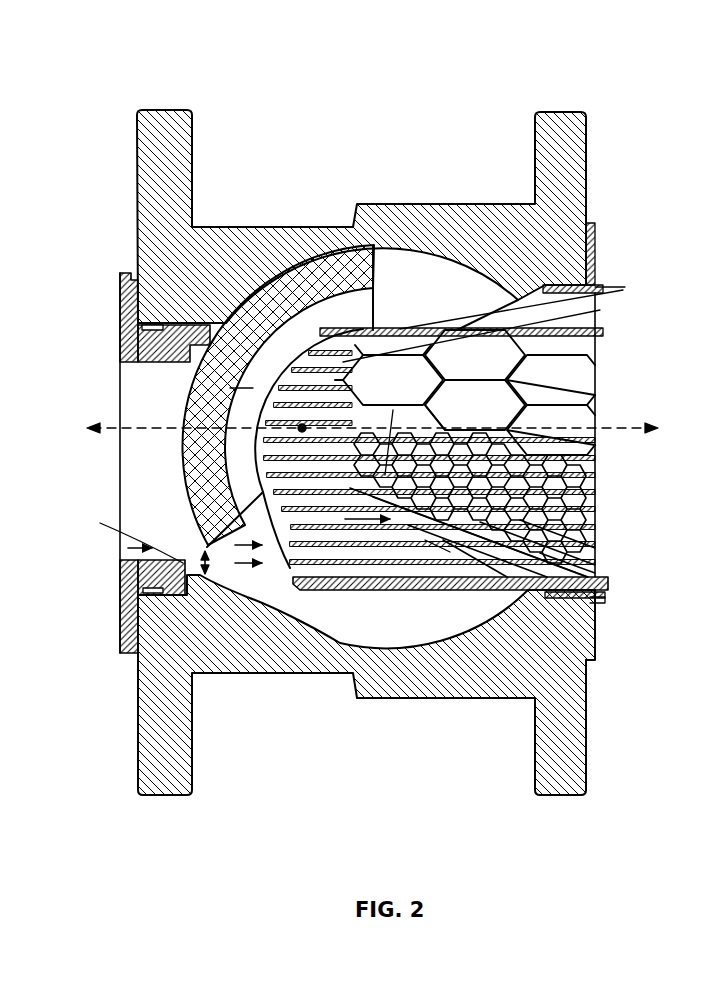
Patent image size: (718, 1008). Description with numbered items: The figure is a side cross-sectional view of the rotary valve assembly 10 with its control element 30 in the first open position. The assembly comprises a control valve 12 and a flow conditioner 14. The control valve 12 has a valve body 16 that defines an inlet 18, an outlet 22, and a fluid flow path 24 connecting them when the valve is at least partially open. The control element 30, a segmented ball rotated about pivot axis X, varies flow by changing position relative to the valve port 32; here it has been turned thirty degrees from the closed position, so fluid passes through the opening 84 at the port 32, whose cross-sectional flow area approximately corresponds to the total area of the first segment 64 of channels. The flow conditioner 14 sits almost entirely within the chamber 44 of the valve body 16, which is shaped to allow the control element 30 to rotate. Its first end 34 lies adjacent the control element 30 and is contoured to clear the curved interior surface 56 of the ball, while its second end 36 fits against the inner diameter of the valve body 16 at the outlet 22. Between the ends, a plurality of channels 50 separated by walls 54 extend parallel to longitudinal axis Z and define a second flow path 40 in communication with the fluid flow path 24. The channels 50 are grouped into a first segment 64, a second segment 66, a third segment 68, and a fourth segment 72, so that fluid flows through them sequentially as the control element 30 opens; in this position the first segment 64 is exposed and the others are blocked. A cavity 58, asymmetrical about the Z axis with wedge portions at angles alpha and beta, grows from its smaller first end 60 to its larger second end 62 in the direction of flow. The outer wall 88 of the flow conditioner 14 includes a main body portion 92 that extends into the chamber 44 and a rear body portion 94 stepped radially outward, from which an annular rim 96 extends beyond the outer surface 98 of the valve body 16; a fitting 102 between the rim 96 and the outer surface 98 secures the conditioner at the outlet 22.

The rotary valve assembly 10 is at (543, 94).
The control valve 12 is at (52, 330).
The flow conditioner 14 is at (400, 535).
The valve body 16 is at (148, 168).
The inlet 18 is at (128, 368).
The outlet 22 is at (596, 475).
The fluid flow path 24 is at (200, 370).
The control element 30 is at (317, 410).
The valve port 32 is at (137, 563).
The first end 34 is at (240, 395).
The second end 36 is at (596, 372).
The second flow path 40 is at (357, 515).
The chamber 44 is at (410, 620).
The channels 50 is at (343, 350).
The walls 54 is at (423, 545).
The interior surface 56 is at (302, 428).
The cavity 58 is at (455, 424).
The first end of the cavity 60 is at (373, 330).
The second end of the cavity 62 is at (596, 532).
The first segment 64 is at (615, 557).
The second segment 66 is at (615, 430).
The third segment 68 is at (615, 380).
The fourth segment 72 is at (615, 285).
The opening 84 is at (243, 570).
The outer wall 88 is at (425, 548).
The main body portion 92 is at (400, 330).
The rear body portion 94 is at (503, 290).
The annular rim 96 is at (598, 284).
The outer surface 98 is at (590, 707).
The fitting 102 is at (588, 224).